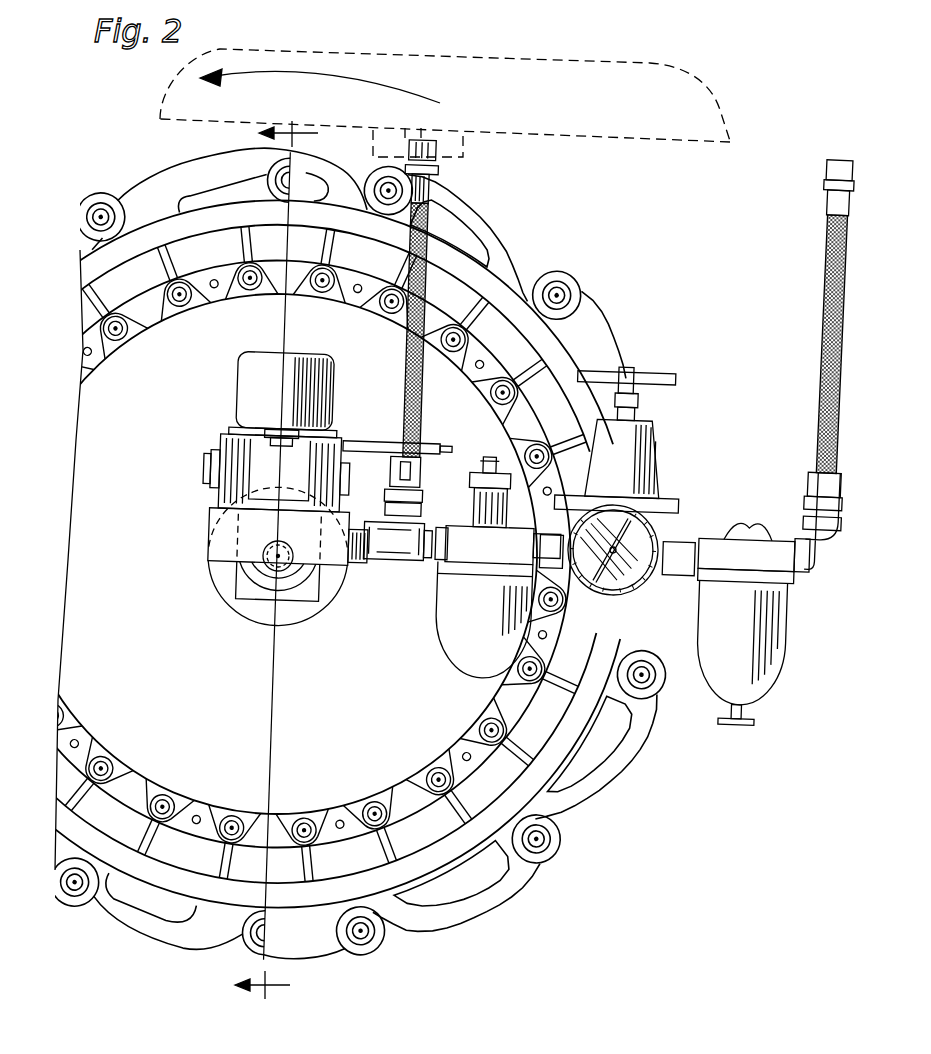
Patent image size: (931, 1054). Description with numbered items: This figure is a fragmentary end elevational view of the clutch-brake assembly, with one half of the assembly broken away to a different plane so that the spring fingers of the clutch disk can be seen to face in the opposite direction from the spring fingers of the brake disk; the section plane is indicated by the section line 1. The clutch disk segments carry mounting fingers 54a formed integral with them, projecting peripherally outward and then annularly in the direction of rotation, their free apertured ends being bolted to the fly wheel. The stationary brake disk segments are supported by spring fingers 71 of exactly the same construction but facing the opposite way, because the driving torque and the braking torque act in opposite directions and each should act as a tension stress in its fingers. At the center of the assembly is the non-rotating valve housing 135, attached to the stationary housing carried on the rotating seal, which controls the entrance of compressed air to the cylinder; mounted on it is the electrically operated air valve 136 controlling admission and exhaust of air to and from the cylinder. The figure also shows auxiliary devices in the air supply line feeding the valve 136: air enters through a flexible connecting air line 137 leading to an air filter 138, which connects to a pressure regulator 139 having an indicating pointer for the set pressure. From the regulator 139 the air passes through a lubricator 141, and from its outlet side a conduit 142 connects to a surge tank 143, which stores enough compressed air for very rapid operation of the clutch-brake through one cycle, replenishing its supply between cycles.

The section line 1 is at (286, 560).
The spring fingers 71 is at (185, 171).
The mounting fingers 54a is at (498, 228).
The valve housing 135 is at (245, 587).
The electrically operated air valve 136 is at (256, 399).
The flexible connecting air line 137 is at (820, 350).
The air filter 138 is at (756, 643).
The pressure regulator 139 is at (614, 500).
The lubricator 141 is at (495, 618).
The conduit 142 is at (402, 369).
The surge tank 143 is at (548, 122).